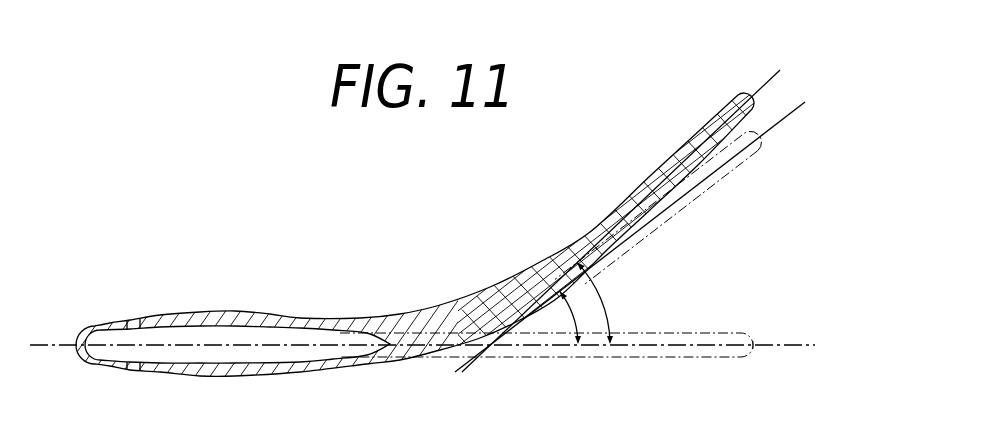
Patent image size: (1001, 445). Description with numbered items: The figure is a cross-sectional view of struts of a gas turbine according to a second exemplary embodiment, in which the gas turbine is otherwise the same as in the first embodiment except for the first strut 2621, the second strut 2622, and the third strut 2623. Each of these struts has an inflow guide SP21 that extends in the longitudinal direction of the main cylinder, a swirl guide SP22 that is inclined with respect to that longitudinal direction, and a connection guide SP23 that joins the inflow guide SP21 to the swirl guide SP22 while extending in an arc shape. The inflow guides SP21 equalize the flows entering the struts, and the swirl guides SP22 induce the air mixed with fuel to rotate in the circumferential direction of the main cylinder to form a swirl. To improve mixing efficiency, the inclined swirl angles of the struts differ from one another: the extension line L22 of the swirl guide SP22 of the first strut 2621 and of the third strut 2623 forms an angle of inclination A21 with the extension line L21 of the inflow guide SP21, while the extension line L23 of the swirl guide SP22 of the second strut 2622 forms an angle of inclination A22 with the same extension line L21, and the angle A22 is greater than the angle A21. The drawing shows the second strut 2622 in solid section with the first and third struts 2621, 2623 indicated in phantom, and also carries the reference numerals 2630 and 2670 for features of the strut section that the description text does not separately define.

The connecting member 2630 is at (137, 320).
The hollow inner space 2670 is at (200, 353).
The inflow guide SP21 is at (290, 373).
The swirl guide SP22 is at (663, 165).
The connection guide SP23 is at (447, 304).
The second strut 2622 is at (721, 112).
The first strut 2621 is at (622, 239).
The third strut 2623 is at (746, 137).
The extension line of the inflow guide L21 is at (792, 345).
The extension line of the swirl guide of the first and third struts L22 is at (804, 102).
The extension line of the swirl guide of the second strut L23 is at (781, 68).
The angle of inclination A21 is at (572, 330).
The angle of inclination A22 is at (610, 322).